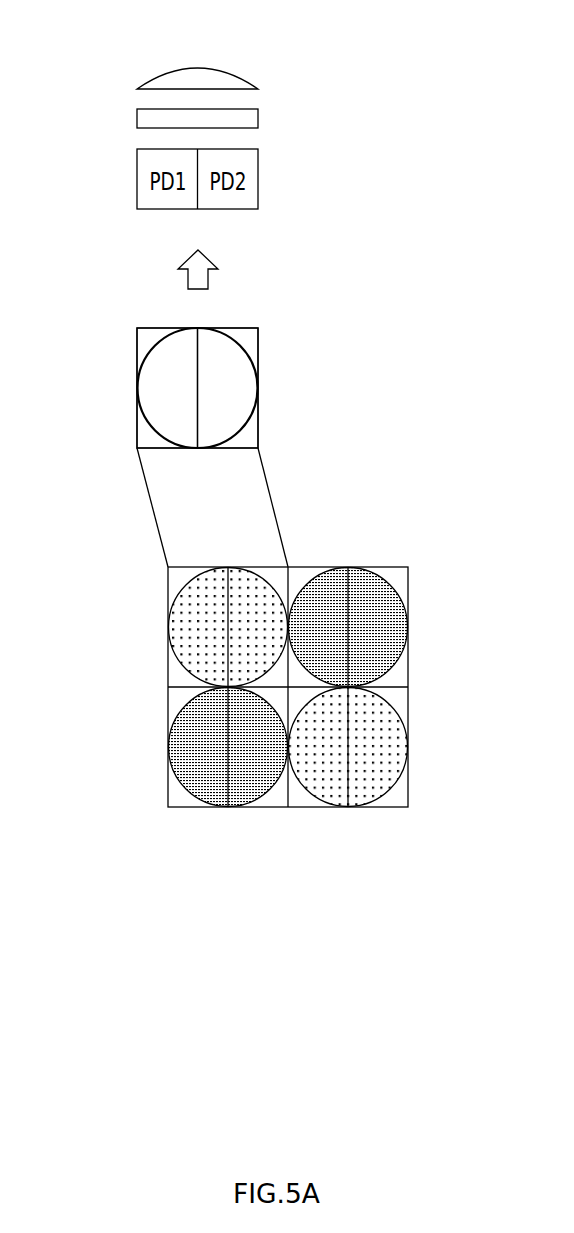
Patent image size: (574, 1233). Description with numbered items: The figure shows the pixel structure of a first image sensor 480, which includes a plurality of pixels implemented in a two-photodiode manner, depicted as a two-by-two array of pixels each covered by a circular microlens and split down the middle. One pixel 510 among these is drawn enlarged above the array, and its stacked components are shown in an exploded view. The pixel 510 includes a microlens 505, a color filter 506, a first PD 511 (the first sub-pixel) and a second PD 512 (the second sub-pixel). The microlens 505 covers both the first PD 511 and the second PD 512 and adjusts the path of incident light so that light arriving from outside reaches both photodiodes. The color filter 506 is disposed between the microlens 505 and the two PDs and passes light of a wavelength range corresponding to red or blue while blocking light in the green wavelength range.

The first image sensor 480 is at (347, 546).
The microlens 505 is at (196, 68).
The color filter 506 is at (137, 111).
The pixel 510 is at (226, 388).
The first PD 511 is at (137, 342).
The second PD 512 is at (259, 355).